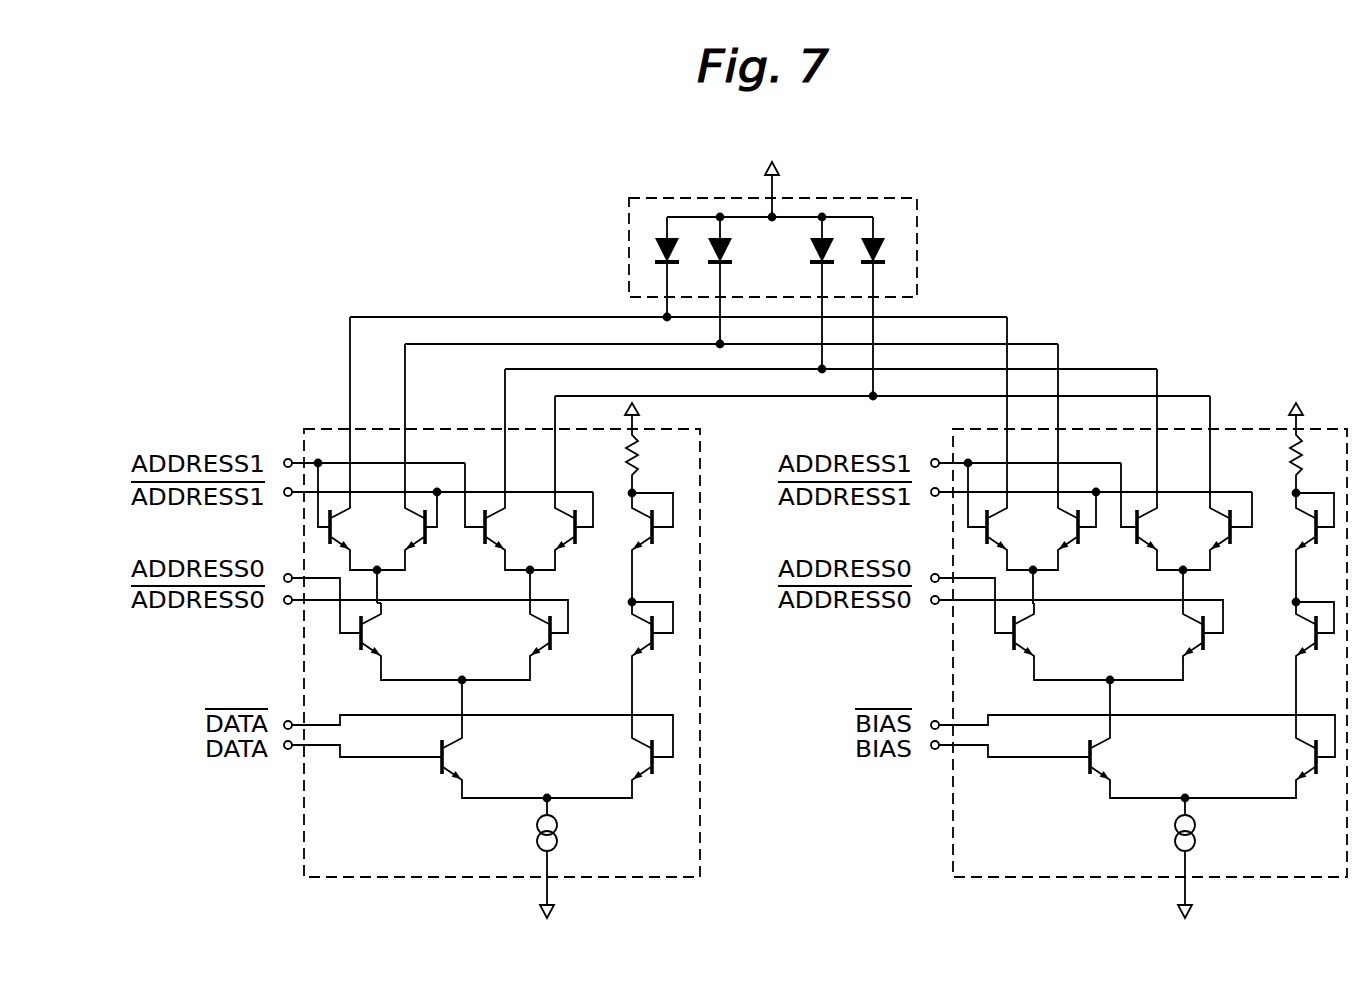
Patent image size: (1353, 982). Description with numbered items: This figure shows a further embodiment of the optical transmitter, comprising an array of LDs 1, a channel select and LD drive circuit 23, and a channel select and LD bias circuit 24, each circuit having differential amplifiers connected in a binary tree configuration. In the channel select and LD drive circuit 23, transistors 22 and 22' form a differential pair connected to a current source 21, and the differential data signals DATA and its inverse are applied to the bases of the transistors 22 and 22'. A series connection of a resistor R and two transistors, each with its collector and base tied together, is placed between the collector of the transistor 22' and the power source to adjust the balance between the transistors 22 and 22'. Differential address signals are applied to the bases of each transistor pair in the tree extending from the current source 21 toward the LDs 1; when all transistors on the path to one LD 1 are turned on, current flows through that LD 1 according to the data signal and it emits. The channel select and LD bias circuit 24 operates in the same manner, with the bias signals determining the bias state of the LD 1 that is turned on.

The LD 1 is at (880, 258).
The current source 21 is at (560, 840).
The transistor 22 is at (480, 757).
The transistor 22' is at (618, 757).
The channel select and LD drive circuit 23 is at (492, 672).
The channel select and LD bias circuit 24 is at (1078, 878).
The resistor R is at (640, 456).